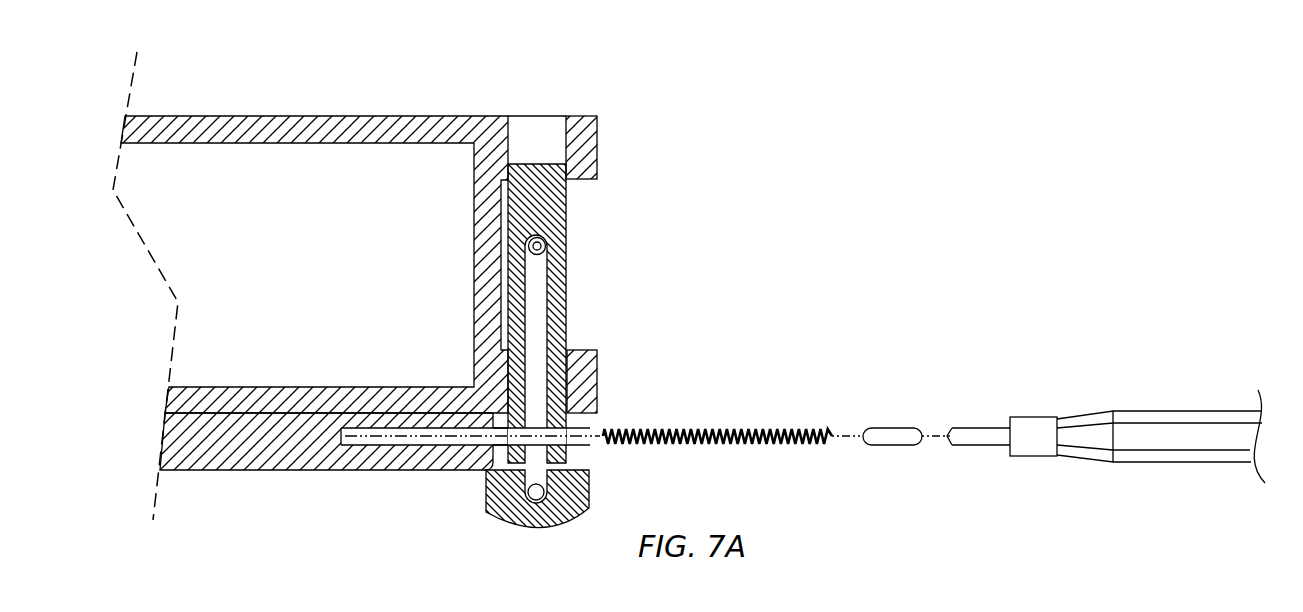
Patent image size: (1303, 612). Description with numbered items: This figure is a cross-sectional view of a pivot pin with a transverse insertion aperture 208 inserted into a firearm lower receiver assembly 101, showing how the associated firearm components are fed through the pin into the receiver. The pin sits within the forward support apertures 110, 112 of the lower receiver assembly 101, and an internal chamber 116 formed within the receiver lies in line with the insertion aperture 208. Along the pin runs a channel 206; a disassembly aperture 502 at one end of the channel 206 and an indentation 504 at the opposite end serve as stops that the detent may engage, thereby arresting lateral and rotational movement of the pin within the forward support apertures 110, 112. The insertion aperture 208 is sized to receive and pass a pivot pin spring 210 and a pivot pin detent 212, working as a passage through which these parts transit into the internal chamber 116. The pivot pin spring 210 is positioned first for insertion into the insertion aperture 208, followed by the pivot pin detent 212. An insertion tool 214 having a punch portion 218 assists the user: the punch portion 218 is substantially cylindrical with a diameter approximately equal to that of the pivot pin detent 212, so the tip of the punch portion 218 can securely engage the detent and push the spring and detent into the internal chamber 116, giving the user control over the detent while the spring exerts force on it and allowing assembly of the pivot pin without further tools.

The firearm lower receiver assembly 101 is at (414, 98).
The forward support aperture 110 is at (575, 365).
The forward support aperture 112 is at (547, 137).
The internal chamber 116 is at (362, 426).
The channel 206 is at (536, 322).
The insertion aperture 208 is at (483, 450).
The pivot pin spring 210 is at (745, 444).
The pivot pin detent 212 is at (894, 447).
The insertion tool 214 is at (1161, 463).
The punch portion 218 is at (974, 428).
The disassembly aperture 502 is at (546, 240).
The indentation 504 is at (527, 497).